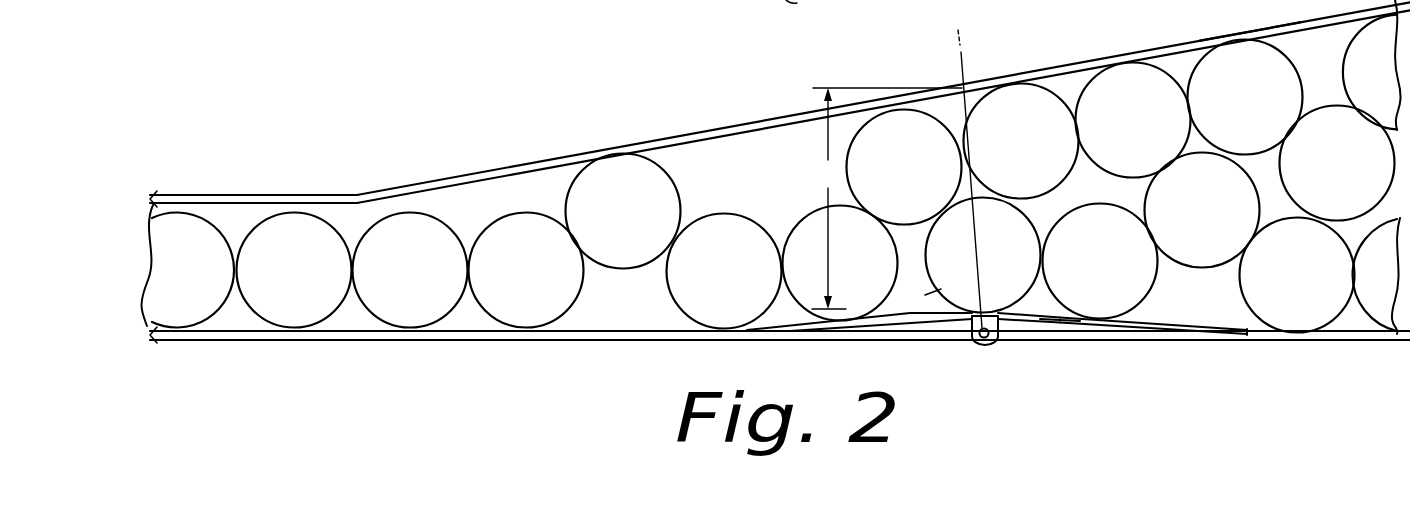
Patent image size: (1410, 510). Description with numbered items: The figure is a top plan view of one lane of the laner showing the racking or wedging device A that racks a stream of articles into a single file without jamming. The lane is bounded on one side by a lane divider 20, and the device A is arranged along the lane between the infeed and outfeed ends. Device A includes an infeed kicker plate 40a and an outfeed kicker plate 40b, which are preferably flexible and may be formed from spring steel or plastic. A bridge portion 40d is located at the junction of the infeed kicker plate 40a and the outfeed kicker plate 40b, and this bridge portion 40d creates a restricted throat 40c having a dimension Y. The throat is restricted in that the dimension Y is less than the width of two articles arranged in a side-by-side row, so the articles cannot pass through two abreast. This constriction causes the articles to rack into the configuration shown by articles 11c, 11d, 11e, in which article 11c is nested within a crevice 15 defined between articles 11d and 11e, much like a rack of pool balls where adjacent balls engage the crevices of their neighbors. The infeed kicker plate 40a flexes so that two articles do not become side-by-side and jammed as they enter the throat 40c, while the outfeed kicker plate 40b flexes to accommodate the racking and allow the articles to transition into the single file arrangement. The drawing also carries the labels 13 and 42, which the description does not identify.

The article 11c is at (1022, 267).
The article 11d is at (924, 184).
The article 11e is at (1024, 163).
The upper guide plate 13 is at (1252, 0).
The crevice 15 is at (918, 291).
The lane divider 20 is at (1222, 343).
The infeed kicker plate 40a is at (1127, 328).
The outfeed kicker plate 40b is at (918, 324).
The restricted throat 40c is at (813, 126).
The bridge portion 40d is at (1008, 318).
The pivot 42 is at (972, 330).
The racking or wedging device A is at (1061, 324).
The throat dimension Y is at (887, 198).